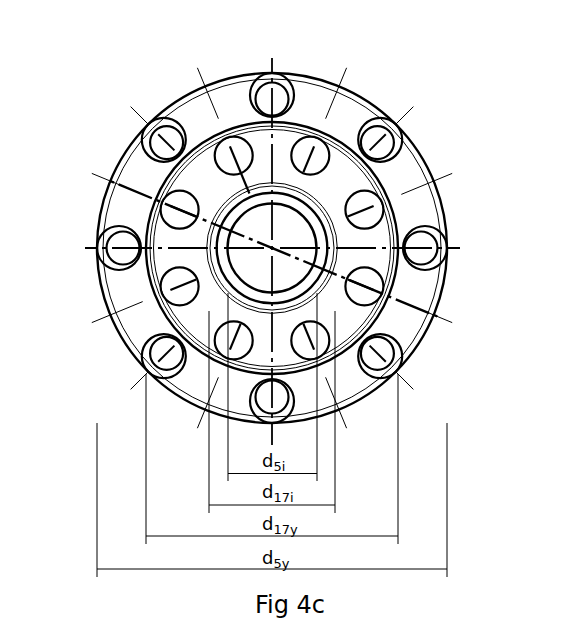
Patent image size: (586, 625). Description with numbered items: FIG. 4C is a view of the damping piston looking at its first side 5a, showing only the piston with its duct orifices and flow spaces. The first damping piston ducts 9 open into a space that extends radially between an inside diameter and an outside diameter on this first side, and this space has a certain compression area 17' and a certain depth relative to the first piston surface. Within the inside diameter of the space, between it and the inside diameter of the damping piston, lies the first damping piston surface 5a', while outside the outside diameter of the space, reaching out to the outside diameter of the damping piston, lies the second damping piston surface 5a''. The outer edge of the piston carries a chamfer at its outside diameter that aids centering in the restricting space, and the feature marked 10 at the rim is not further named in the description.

The first side of the damping piston 5a is at (311, 211).
The first damping piston surface 5a' is at (279, 200).
The second damping piston surface 5a'' is at (272, 192).
The first damping piston ducts 9 is at (205, 219).
The outer rim edge 10 is at (145, 132).
The compression area 17' is at (311, 248).